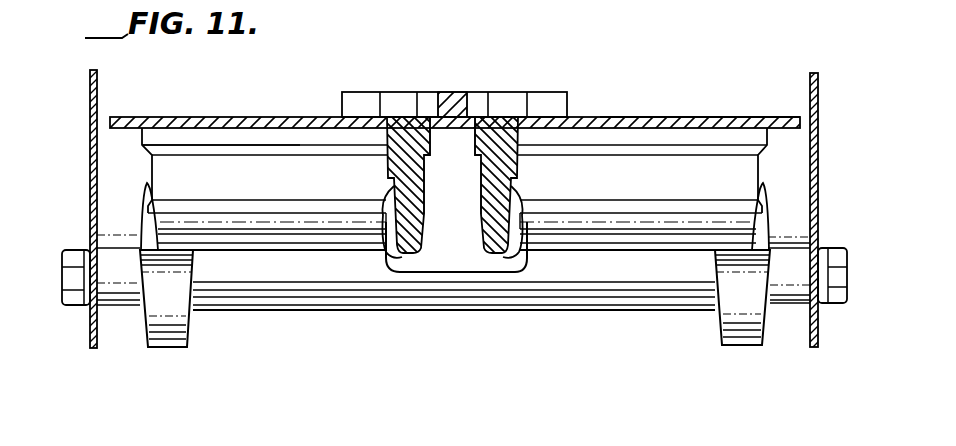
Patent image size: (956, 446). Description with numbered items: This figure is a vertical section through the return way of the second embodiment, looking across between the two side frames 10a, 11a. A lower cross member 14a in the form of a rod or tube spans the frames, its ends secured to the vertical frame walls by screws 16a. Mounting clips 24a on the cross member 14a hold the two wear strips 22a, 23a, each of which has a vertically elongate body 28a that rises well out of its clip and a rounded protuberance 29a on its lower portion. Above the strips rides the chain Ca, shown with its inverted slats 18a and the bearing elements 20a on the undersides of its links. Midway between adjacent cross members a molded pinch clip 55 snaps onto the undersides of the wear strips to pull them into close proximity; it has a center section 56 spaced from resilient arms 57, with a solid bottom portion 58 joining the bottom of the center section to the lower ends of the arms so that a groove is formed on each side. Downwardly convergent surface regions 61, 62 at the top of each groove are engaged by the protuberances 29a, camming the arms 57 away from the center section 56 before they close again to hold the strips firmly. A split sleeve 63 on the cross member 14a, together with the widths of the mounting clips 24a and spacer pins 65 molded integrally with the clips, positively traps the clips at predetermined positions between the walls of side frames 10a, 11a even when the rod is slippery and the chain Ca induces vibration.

The side frame 10a is at (818, 188).
The side frame 11a is at (90, 128).
The lower cross member 14a is at (135, 310).
The screw 16a is at (76, 308).
The inverted slat 18a is at (309, 122).
The bearing element 20a is at (400, 92).
The wear strip 22a is at (762, 163).
The wear strip 23a is at (238, 145).
The mounting clip 24a is at (186, 345).
The body 28a is at (392, 164).
The rounded protuberance 29a is at (384, 240).
The pinch clip 55 is at (438, 277).
The center section 56 is at (463, 211).
The resilient arm 57 is at (392, 214).
The solid bottom portion 58 is at (482, 265).
The downwardly convergent surface region 61 is at (432, 186).
The downwardly convergent surface region 62 is at (392, 185).
The split sleeve 63 is at (632, 298).
The spacer pin 65 is at (132, 242).
The chain Ca is at (656, 118).